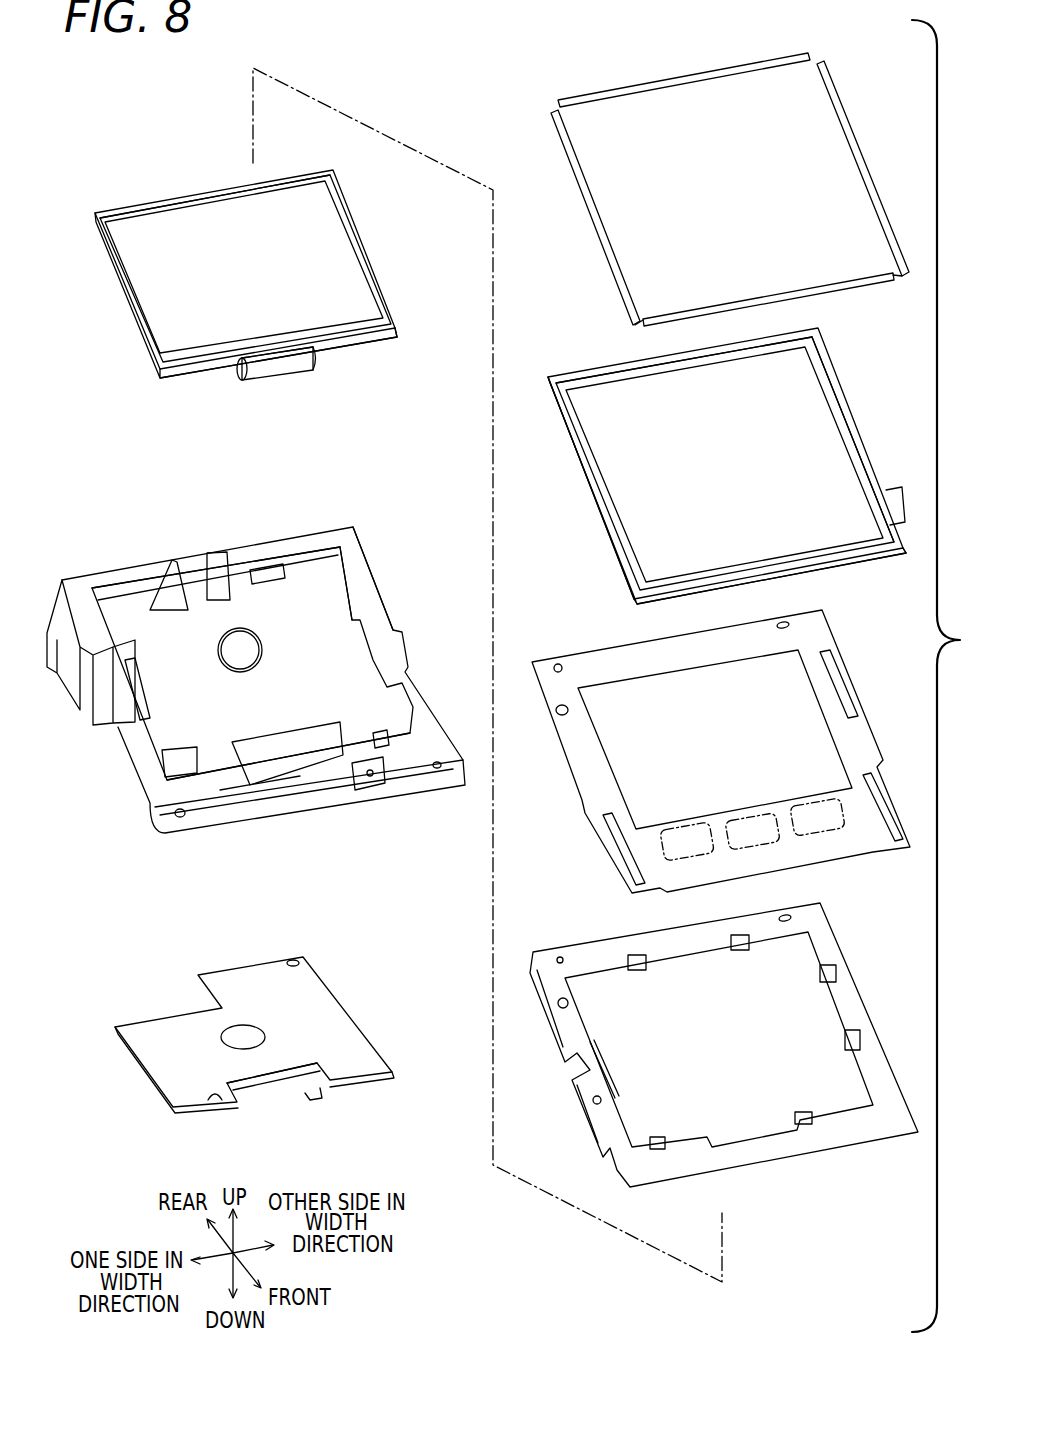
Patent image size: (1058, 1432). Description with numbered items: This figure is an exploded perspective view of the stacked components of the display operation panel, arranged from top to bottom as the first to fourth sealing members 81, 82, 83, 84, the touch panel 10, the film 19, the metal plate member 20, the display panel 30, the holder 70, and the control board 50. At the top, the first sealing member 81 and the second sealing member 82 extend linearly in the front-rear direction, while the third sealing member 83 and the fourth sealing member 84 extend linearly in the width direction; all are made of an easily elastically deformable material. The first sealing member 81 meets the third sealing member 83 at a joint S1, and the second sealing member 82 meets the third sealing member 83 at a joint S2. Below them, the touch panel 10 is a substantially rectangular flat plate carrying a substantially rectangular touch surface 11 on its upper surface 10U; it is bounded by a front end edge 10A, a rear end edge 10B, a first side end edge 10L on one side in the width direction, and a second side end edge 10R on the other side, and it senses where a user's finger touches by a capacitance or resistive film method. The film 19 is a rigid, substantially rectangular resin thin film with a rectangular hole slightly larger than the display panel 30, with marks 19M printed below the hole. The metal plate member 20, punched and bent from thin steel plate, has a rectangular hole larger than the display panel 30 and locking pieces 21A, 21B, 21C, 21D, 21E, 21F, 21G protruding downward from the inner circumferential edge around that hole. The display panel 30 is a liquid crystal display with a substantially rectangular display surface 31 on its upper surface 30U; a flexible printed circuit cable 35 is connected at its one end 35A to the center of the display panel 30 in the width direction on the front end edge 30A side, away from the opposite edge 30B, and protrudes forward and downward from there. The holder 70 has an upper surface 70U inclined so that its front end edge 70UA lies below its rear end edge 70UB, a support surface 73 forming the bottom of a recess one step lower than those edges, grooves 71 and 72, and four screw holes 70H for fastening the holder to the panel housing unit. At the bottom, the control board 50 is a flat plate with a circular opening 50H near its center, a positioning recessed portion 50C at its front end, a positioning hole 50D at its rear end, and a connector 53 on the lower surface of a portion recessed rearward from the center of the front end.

The touch panel 10 is at (600, 543).
The front end edge 10A is at (858, 560).
The rear end edge 10B is at (593, 366).
The upper surface 10U is at (820, 356).
The second side end edge 10R is at (838, 385).
The first side end edge 10L is at (596, 500).
The touch surface 11 is at (712, 470).
The film 19 is at (590, 856).
The marks 19M is at (817, 817).
The metal plate member 20 is at (812, 1172).
The locking piece 21A is at (745, 951).
The locking piece 21B is at (645, 971).
The locking piece 21C is at (606, 1054).
The locking piece 21D is at (660, 1138).
The locking piece 21E is at (803, 1112).
The locking piece 21F is at (860, 1038).
The locking piece 21G is at (838, 970).
The display panel 30 is at (138, 365).
The front end edge 30A is at (368, 347).
The rear surface of touch panel 30B is at (162, 198).
The upper surface 30U is at (212, 358).
The display surface 31 is at (235, 268).
The cable 35 is at (286, 377).
The one end 35A is at (280, 356).
The control board 50 is at (138, 1085).
The positioning recessed portion 50C is at (216, 1100).
The positioning hole 50D is at (300, 963).
The circular opening 50H is at (232, 1032).
The connector 53 is at (272, 1082).
The holder 70 is at (138, 802).
The screw holes 70H is at (181, 818).
The upper surface 70U is at (362, 585).
The front end edge 70UA is at (240, 782).
The rear end edge 70UB is at (275, 540).
The groove 71 is at (258, 800).
The groove 72 is at (417, 772).
The support surface 73 is at (270, 680).
The first sealing member 81 is at (600, 212).
The second sealing member 82 is at (843, 142).
The third sealing member 83 is at (757, 297).
The fourth sealing member 84 is at (700, 82).
The joint S1 is at (640, 302).
The joint S2 is at (887, 262).